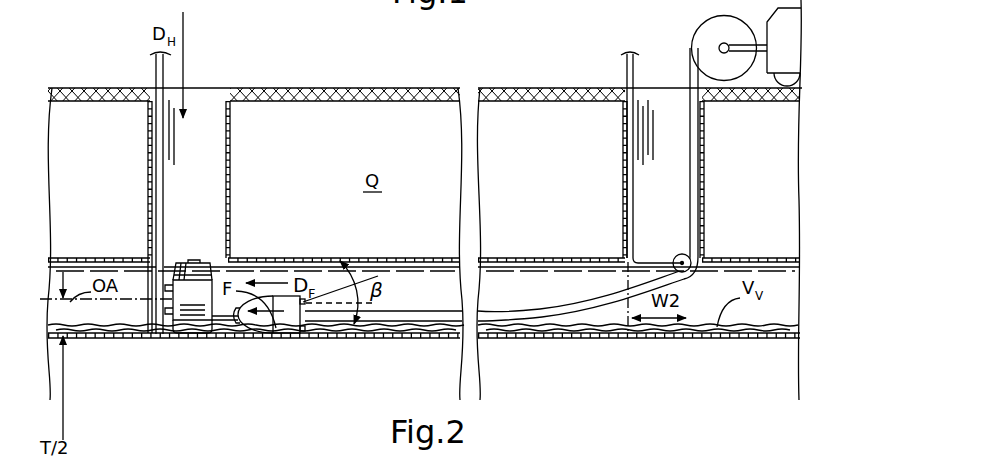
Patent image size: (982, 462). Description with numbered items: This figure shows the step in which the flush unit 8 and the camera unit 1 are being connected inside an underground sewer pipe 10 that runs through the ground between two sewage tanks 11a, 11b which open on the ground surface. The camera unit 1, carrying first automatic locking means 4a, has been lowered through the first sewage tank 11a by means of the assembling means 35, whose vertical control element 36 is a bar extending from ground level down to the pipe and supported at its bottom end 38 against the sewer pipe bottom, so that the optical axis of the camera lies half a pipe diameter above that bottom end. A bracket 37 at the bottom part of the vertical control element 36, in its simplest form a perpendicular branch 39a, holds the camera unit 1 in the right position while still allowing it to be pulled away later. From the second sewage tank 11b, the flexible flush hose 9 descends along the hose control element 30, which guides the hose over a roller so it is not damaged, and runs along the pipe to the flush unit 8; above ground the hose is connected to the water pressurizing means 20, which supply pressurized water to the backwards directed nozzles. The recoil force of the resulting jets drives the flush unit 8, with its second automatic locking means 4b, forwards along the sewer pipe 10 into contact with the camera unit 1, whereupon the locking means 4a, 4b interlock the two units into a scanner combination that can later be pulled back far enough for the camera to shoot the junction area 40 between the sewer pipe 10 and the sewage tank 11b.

The camera unit 1 is at (204, 303).
The first automatic locking means 4a is at (216, 322).
The second automatic locking means 4b is at (238, 324).
The flush unit 8 is at (278, 322).
The flexible flush hose 9 is at (688, 80).
The sewer pipe 10 is at (527, 300).
The first sewage tank 11a is at (205, 162).
The second sewage tank 11b is at (668, 136).
The water pressurizing means 20 is at (790, 52).
The hose control element 30 is at (638, 64).
The assembling means 35 is at (171, 156).
The vertical control element 36 is at (163, 290).
The bracket 37 is at (180, 263).
The bottom end 38 is at (168, 312).
The branch 39a is at (192, 262).
The junction area 40 is at (629, 342).